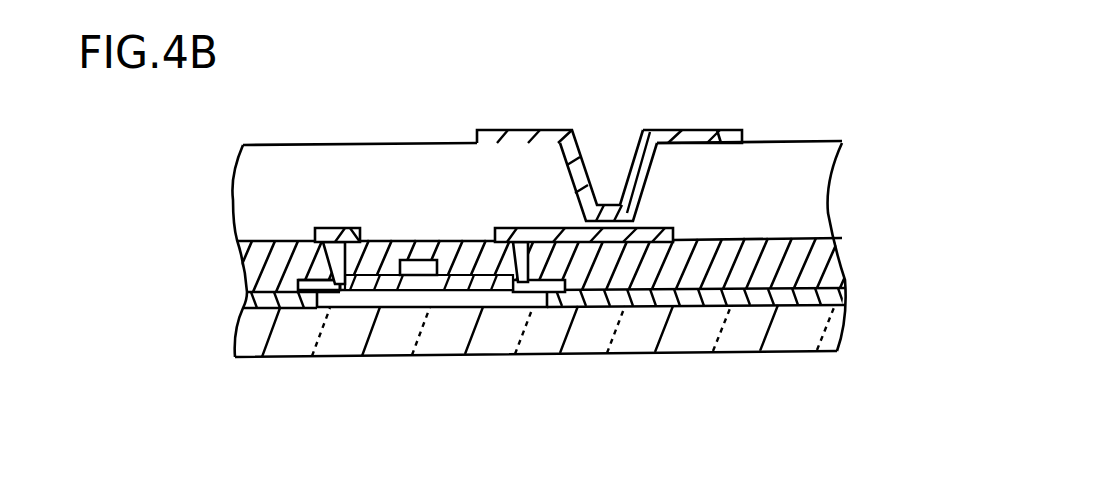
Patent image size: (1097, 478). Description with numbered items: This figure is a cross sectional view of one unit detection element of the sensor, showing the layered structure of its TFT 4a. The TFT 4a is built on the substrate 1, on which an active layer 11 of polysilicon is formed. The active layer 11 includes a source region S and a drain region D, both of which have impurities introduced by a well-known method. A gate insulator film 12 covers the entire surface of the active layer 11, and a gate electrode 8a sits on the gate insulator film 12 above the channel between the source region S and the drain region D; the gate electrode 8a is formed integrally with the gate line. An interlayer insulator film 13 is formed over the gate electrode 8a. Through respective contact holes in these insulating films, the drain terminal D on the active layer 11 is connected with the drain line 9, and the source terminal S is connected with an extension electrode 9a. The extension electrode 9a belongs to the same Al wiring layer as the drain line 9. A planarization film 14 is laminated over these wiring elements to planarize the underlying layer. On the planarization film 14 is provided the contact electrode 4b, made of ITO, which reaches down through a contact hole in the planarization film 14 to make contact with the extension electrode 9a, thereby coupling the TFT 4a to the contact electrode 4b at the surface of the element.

The substrate 1 is at (845, 330).
The TFT 4a is at (437, 177).
The contact electrode 4b is at (742, 133).
The gate electrode 8a is at (405, 300).
The drain line 9 is at (338, 287).
The extension electrode 9a is at (573, 242).
The active layer 11 is at (441, 290).
The gate insulator film 12 is at (845, 291).
The interlayer insulator film 13 is at (840, 246).
The planarization film 14 is at (842, 160).
The drain region D is at (333, 291).
The source region S is at (505, 292).